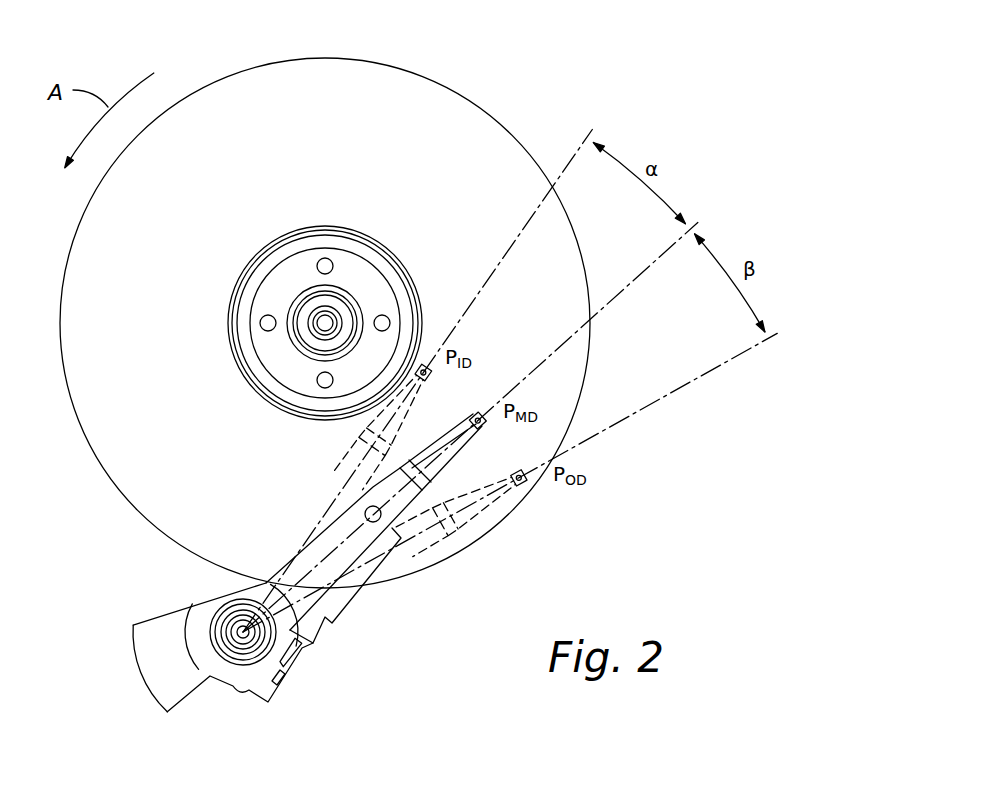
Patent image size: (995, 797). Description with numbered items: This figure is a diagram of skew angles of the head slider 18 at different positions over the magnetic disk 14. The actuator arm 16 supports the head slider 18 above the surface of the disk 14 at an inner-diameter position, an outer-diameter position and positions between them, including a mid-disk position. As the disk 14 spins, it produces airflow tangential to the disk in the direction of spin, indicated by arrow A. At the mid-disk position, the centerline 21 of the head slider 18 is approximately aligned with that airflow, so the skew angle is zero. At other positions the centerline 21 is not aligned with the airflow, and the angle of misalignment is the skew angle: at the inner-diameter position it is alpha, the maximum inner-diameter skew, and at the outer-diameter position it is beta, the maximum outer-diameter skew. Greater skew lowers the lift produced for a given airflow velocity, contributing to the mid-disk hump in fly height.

The magnetic disk 14 is at (318, 67).
The actuator arm 16 is at (316, 683).
The head slider 18 is at (425, 362).
The centerline 21 is at (628, 287).